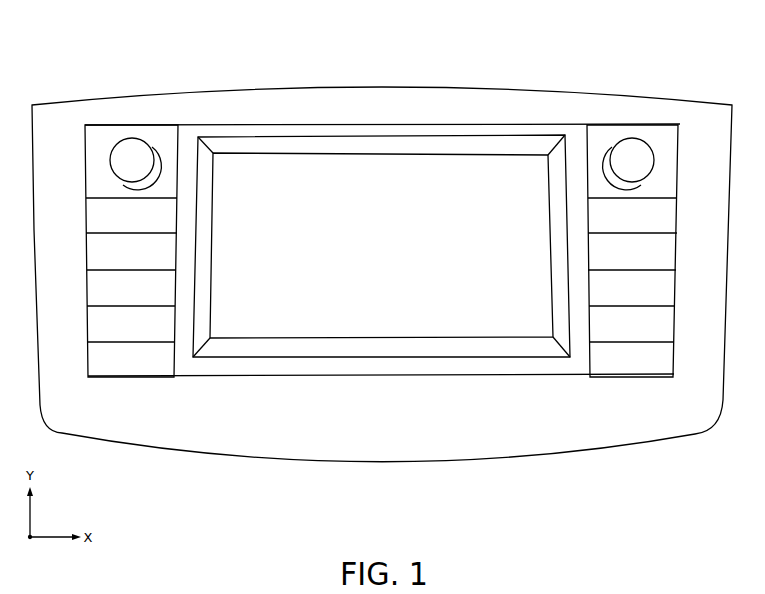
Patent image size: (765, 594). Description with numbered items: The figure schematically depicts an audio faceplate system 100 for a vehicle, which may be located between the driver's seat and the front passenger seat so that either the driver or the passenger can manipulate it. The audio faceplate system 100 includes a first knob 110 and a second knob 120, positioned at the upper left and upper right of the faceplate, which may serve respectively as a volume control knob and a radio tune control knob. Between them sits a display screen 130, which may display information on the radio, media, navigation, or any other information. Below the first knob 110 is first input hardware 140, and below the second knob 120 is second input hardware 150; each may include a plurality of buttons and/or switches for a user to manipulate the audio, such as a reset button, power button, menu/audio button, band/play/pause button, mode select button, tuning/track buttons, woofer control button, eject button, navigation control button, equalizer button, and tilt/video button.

The audio faceplate system 100 is at (382, 231).
The first knob 110 is at (133, 138).
The second knob 120 is at (630, 138).
The display screen 130 is at (418, 328).
The first input hardware 140 is at (142, 379).
The second input hardware 150 is at (598, 378).